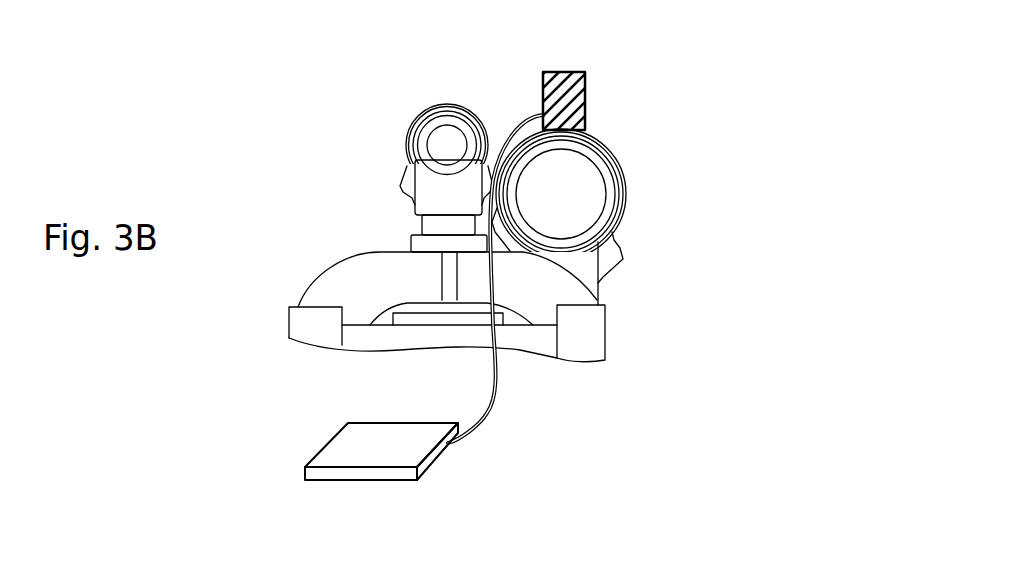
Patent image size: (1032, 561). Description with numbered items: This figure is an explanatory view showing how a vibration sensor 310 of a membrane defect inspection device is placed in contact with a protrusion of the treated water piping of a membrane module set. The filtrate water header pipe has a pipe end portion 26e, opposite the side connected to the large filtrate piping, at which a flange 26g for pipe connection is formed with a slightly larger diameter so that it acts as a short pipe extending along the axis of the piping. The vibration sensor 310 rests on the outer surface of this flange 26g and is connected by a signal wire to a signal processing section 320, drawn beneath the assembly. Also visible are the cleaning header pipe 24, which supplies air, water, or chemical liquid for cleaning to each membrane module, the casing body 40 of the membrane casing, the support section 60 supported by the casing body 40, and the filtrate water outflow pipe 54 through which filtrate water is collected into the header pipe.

The cleaning header pipe 24 is at (462, 120).
The pipe end portion 26e is at (625, 200).
The flange 26g is at (612, 162).
The casing body 40 is at (592, 348).
The filtrate water outflow pipe 54 is at (585, 268).
The support section 60 is at (328, 279).
The vibration sensor 310 is at (586, 92).
The signal processing section 320 is at (432, 460).